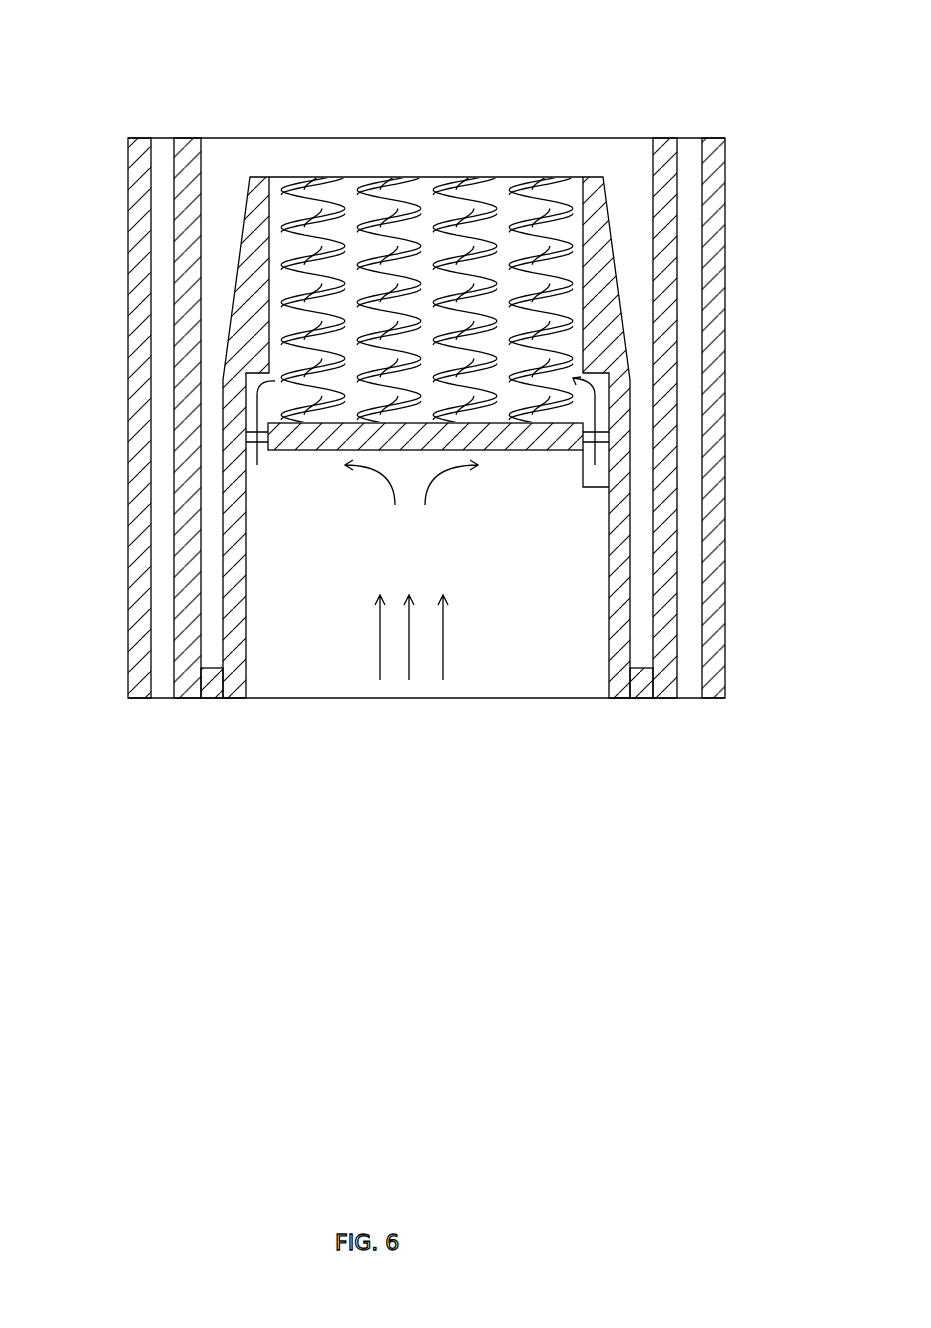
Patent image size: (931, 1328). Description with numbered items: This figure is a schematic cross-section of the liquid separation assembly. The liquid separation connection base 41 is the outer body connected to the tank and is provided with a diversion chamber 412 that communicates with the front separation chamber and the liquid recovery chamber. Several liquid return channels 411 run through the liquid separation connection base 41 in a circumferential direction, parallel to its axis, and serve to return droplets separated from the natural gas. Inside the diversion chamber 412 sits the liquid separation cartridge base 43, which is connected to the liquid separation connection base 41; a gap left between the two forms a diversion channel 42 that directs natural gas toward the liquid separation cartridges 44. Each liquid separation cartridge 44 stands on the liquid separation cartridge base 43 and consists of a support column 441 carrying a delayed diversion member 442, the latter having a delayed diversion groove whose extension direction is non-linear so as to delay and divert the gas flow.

The liquid separation connection base 41 is at (128, 202).
The liquid return channel 411 is at (162, 163).
The diversion chamber 412 is at (530, 684).
The diversion channel 42 is at (607, 400).
The liquid separation cartridge base 43 is at (548, 451).
The liquid separation cartridge 44 is at (433, 218).
The support column 441 is at (390, 200).
The delayed diversion member 442 is at (487, 197).